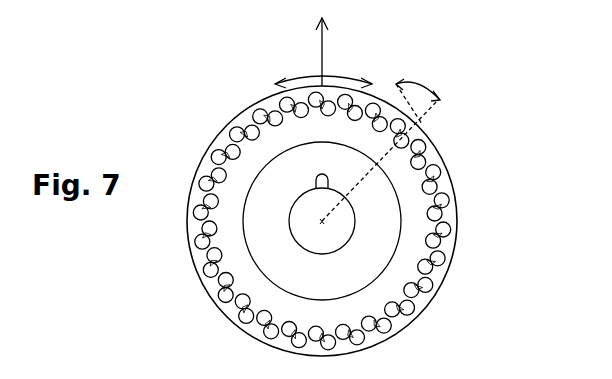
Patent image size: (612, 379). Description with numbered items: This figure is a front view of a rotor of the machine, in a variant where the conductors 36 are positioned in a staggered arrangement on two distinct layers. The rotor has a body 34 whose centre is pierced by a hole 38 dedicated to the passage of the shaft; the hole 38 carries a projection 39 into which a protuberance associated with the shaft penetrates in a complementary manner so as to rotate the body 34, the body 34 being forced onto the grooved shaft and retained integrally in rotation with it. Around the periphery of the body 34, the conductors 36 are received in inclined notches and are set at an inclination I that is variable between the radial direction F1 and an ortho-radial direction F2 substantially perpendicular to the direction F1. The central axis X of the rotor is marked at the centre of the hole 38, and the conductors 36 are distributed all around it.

The body 34 is at (498, 118).
The conductors 36 is at (443, 167).
The hole 38 is at (304, 219).
The projection 39 is at (312, 182).
The axis of rotation X is at (322, 224).
The inclination I is at (418, 86).
The radial direction F1 is at (328, 48).
The ortho-radial direction F2 is at (303, 78).